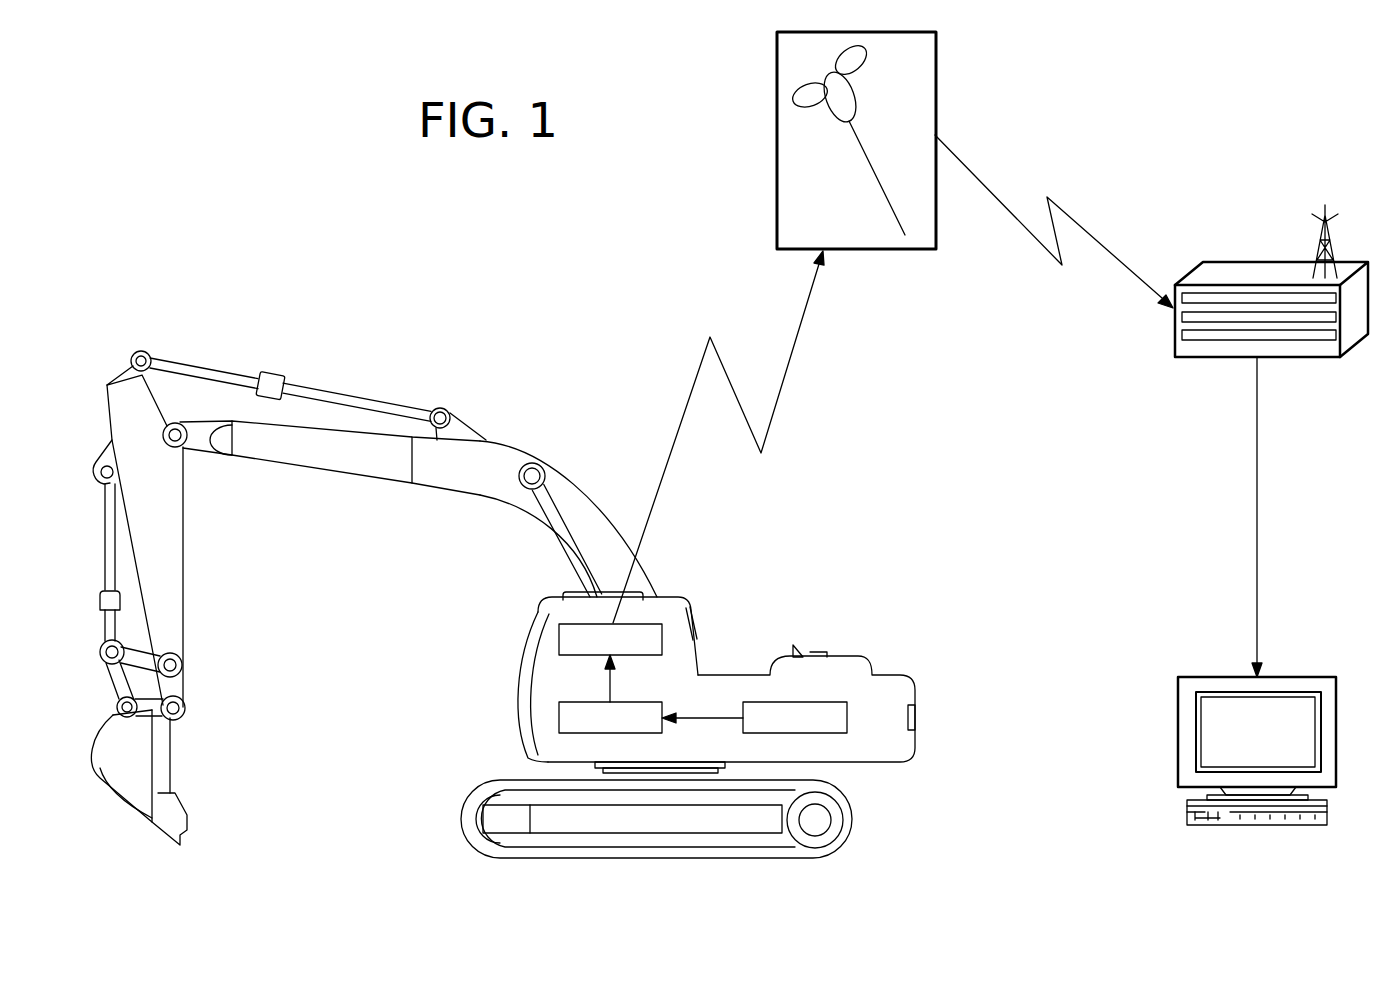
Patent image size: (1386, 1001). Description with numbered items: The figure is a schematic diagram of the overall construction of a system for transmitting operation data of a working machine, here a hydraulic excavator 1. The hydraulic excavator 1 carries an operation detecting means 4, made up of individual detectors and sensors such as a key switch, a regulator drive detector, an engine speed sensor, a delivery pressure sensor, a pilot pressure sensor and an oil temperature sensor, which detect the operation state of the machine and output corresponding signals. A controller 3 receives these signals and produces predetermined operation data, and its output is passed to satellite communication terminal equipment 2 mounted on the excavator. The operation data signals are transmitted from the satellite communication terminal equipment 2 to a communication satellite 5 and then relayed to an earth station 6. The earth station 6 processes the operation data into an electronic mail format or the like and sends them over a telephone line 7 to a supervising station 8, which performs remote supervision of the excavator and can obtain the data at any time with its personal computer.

The hydraulic excavator 1 is at (366, 395).
The satellite communication terminal equipment 2 is at (662, 638).
The controller 3 is at (558, 718).
The operation detecting means 4 is at (843, 727).
The communication satellite 5 is at (937, 38).
The earth station 6 is at (1237, 262).
The telephone line 7 is at (1260, 437).
The supervising station 8 is at (1322, 677).